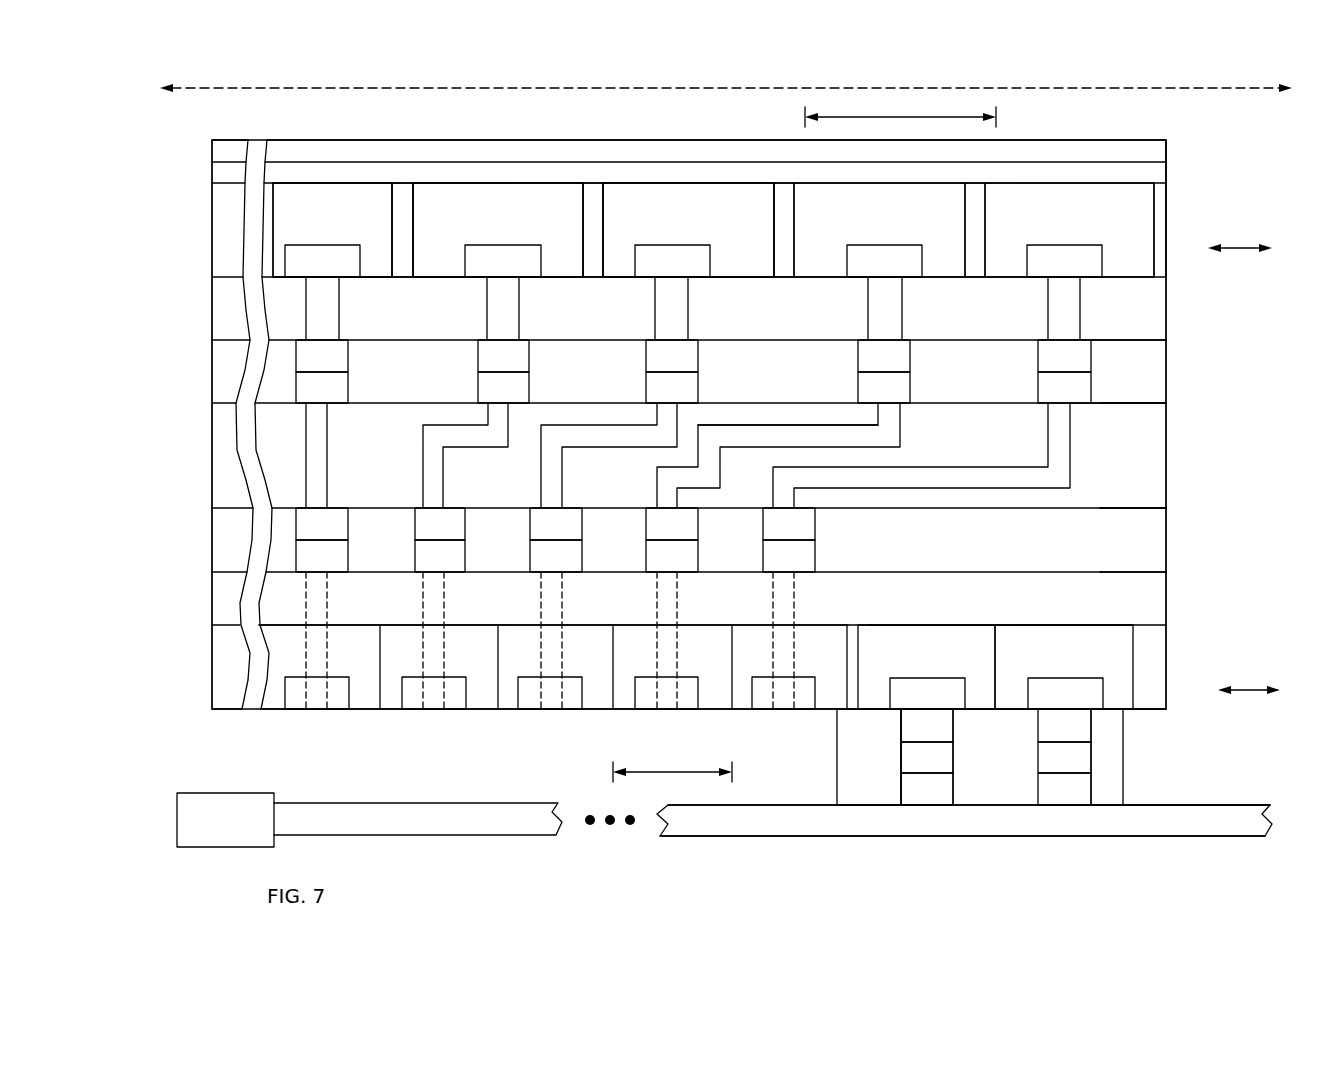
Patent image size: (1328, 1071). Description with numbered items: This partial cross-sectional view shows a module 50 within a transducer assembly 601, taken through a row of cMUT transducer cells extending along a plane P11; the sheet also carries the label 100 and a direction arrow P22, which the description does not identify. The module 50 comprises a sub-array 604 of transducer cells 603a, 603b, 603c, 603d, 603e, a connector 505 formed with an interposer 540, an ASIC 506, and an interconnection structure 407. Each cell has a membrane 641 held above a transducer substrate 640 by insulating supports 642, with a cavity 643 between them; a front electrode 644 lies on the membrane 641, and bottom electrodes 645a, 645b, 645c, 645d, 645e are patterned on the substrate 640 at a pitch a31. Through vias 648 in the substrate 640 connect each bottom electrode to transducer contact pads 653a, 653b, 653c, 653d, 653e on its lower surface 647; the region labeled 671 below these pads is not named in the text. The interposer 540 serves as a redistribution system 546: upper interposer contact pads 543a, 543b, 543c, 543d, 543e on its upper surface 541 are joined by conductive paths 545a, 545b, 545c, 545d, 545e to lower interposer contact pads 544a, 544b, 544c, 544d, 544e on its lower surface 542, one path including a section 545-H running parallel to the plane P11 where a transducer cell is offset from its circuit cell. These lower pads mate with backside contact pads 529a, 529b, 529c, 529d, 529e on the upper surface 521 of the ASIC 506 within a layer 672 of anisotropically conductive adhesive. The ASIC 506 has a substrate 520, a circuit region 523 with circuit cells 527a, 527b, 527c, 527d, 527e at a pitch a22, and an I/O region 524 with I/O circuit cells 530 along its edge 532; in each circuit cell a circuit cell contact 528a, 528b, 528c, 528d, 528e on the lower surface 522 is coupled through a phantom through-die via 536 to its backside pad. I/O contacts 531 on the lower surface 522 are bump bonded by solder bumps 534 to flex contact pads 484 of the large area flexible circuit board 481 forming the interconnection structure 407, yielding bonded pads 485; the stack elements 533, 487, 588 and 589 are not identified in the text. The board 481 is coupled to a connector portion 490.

The display system 100 is at (1269, 69).
The module 50 is at (372, 128).
The transducer assembly 601 is at (977, 87).
The pitch of the transducer cells a31 is at (900, 107).
The front electrode 644 is at (1143, 152).
The membrane 641 is at (1143, 173).
The plane P11 is at (1240, 248).
The transducer cell 603a is at (335, 216).
The transducer cell 603b is at (474, 216).
The transducer cell 603c is at (663, 216).
The transducer cell 603d is at (865, 216).
The transducer cell 603e is at (1046, 216).
The cavity 643 is at (370, 202).
The insulating support 642 is at (402, 203).
The sub-array 604 is at (206, 340).
The transducer bottom electrode 645a is at (346, 272).
The transducer bottom electrode 645b is at (527, 272).
The transducer bottom electrode 645c is at (695, 272).
The transducer bottom electrode 645d is at (907, 272).
The transducer bottom electrode 645e is at (1088, 272).
The through via 648 is at (1080, 307).
The transducer substrate 640 is at (781, 314).
The transducer contact pad 653a is at (346, 366).
The transducer contact pad 653b is at (527, 366).
The transducer contact pad 653c is at (695, 366).
The transducer contact pad 653d is at (908, 366).
The transducer contact pad 653e is at (1088, 366).
The upper interposer contact pad 543a is at (346, 397).
The upper interposer contact pad 543b is at (527, 397).
The upper interposer contact pad 543c is at (695, 397).
The upper interposer contact pad 543d is at (908, 397).
The upper interposer contact pad 543e is at (1088, 397).
The bonding layer 671 is at (599, 372).
The lower surface 647 is at (1135, 343).
The upper surface 541 is at (1160, 404).
The conductive path 545a is at (333, 455).
The conductive path 545b is at (417, 445).
The conductive path 545c is at (538, 498).
The conductive path 545d is at (653, 499).
The conductive path 545e is at (1045, 416).
The horizontal wiring segment 545-H is at (816, 421).
The redistribution system 546 is at (206, 403).
The interposer 540 is at (1151, 452).
The connector 505 is at (1168, 437).
The lower interposer contact pad 544a is at (346, 536).
The lower interposer contact pad 544b is at (464, 536).
The lower interposer contact pad 544c is at (579, 536).
The lower interposer contact pad 544d is at (696, 536).
The lower interposer contact pad 544e is at (813, 536).
The backside contact pad 529a is at (346, 567).
The backside contact pad 529b is at (464, 567).
The backside contact pad 529c is at (579, 567).
The backside contact pad 529d is at (696, 567).
The backside contact pad 529e is at (813, 567).
The layer of anisotropically conductive adhesive 672 is at (917, 557).
The lower surface 542 is at (1135, 510).
The upper surface 521 is at (1143, 572).
The through-die via 536 is at (306, 580).
The substrate 520 is at (864, 604).
The circuit region 523 is at (848, 613).
The I/O region 524 is at (1133, 613).
The edge 532 is at (1168, 590).
The ASIC 506 is at (206, 572).
The circuit cell 527a is at (377, 664).
The circuit cell 527b is at (494, 664).
The circuit cell 527c is at (608, 664).
The circuit cell 527d is at (726, 664).
The circuit cell 527e is at (844, 664).
The circuit cell contact 528a is at (339, 698).
The circuit cell contact 528b is at (457, 698).
The circuit cell contact 528c is at (568, 698).
The circuit cell contact 528d is at (647, 698).
The circuit cell contact 528e is at (762, 698).
The pitch of the circuit cells a22 is at (672, 760).
The I/O circuit cell 530 is at (927, 658).
The I/O contact 531 is at (939, 704).
The lower surface 522 is at (1153, 712).
The second direction P22 is at (1250, 690).
The support 588 is at (886, 741).
The solder bump 534 is at (945, 737).
The bonding layer 533 is at (945, 768).
The pad 487 is at (945, 799).
The connection stack 589 is at (964, 718).
The flexible circuit board 481 is at (1087, 831).
The interconnection structure 407 is at (1220, 801).
The flex contact pad 484 is at (1153, 803).
The bonded pad 485 is at (1173, 836).
The connector portion 490 is at (245, 832).